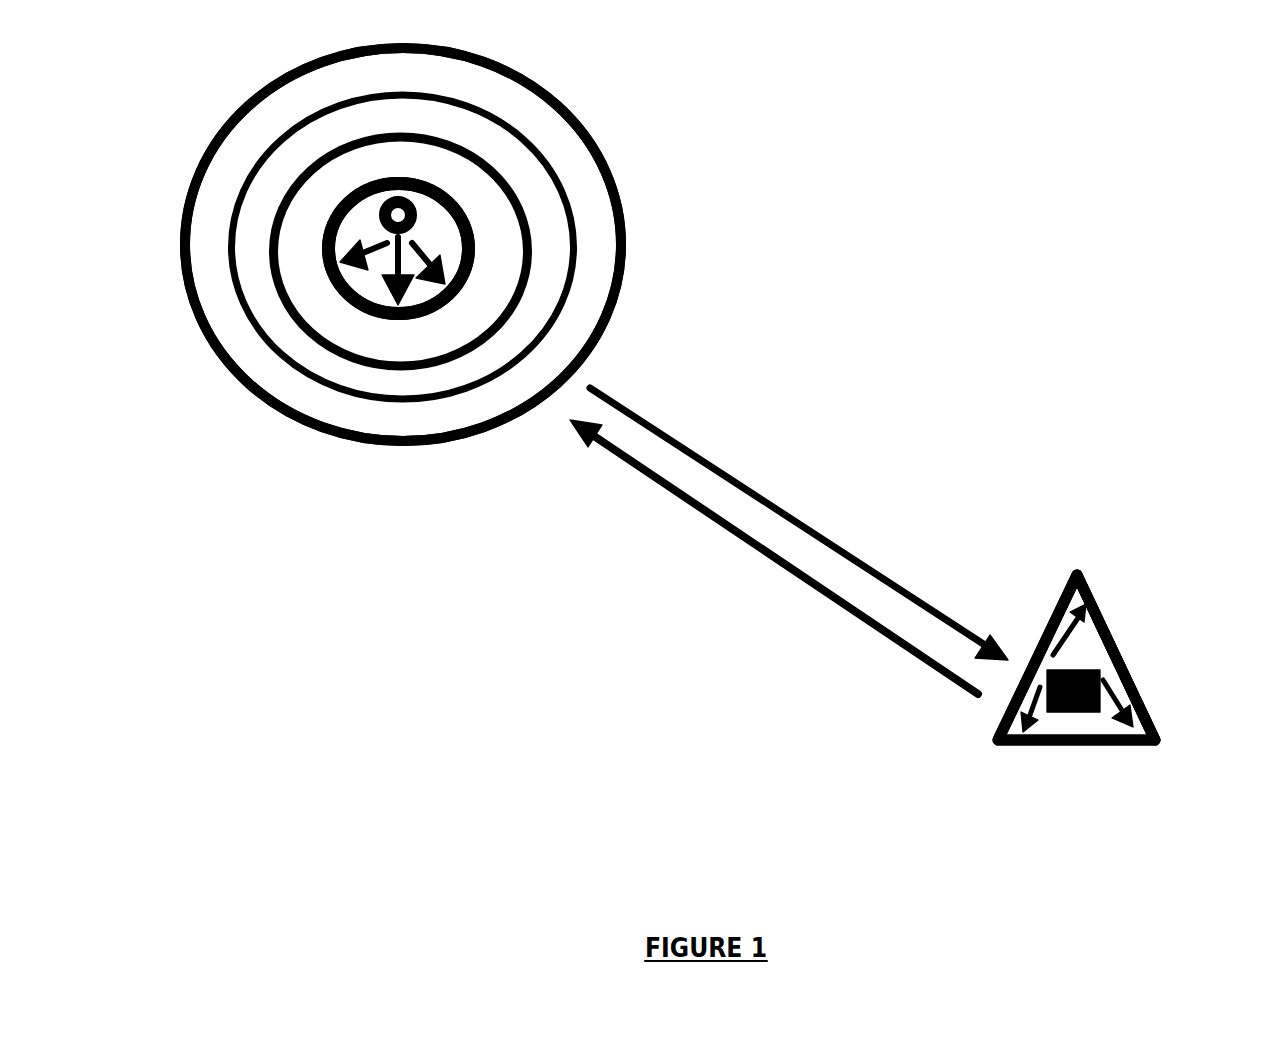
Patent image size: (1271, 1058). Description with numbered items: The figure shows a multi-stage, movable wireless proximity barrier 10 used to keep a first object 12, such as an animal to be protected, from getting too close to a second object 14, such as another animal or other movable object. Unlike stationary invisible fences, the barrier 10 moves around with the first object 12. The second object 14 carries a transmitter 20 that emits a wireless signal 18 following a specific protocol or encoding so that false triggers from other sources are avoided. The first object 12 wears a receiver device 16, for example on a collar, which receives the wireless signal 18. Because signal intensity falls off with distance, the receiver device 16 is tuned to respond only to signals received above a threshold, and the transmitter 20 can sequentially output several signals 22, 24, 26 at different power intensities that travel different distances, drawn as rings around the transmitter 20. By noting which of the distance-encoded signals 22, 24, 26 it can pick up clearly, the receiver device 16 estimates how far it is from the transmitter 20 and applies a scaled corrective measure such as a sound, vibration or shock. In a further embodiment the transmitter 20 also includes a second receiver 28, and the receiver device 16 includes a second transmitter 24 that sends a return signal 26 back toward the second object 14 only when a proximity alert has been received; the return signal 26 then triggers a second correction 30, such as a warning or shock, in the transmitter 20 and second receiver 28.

The multi-stage, movable wireless proximity barrier 10 is at (587, 130).
The first object 12 is at (1013, 732).
The second object 14 is at (347, 308).
The receiver device 16 is at (1075, 668).
The wireless signal 18 is at (817, 520).
The transmitter 20 is at (437, 192).
The signal 22 is at (190, 196).
The signal 24 is at (250, 163).
The signal 26 is at (310, 158).
The second receiver 28 is at (423, 203).
The second correction 30 is at (342, 255).